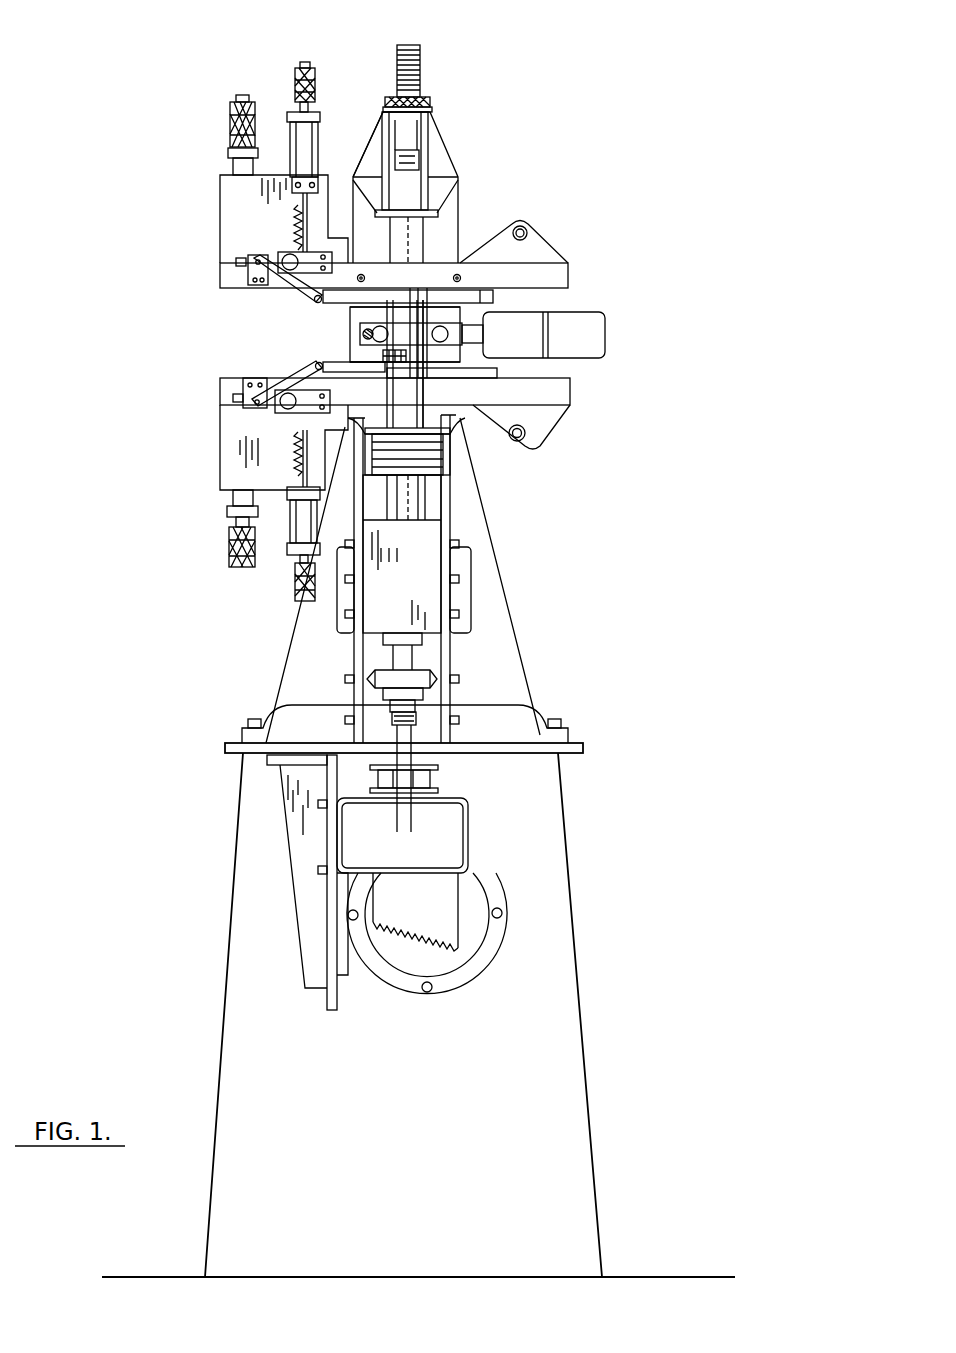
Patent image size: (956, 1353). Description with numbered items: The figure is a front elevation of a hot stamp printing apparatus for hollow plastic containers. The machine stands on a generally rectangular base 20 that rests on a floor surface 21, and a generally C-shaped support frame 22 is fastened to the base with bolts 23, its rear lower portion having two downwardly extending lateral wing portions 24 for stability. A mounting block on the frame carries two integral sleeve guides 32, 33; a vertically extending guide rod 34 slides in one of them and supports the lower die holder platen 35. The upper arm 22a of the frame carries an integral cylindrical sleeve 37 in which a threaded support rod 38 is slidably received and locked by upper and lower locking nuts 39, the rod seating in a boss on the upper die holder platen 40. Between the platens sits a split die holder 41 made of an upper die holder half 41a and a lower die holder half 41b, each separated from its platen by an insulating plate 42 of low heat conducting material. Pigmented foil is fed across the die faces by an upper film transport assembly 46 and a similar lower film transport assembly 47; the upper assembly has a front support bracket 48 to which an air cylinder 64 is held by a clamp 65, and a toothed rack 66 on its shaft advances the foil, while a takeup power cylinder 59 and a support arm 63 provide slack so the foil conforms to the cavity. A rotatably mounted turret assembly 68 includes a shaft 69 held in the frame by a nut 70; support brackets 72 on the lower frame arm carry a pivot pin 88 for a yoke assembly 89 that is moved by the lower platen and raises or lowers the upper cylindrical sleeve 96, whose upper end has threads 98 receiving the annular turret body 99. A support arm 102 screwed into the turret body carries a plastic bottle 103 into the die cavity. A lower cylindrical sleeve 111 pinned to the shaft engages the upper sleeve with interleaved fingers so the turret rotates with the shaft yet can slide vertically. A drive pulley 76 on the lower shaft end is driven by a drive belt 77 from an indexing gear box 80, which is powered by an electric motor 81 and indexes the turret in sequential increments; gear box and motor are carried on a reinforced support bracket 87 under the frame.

The base 20 is at (569, 1046).
The floor surface 21 is at (655, 1277).
The support frame 22 is at (478, 178).
The upper arm of the support frame 22a is at (374, 152).
The bolts 23 is at (250, 720).
The lateral wing portions 24 is at (290, 667).
The sleeve guide 32 is at (348, 605).
The sleeve guide 33 is at (463, 563).
The guide rod 34 is at (348, 503).
The lower die holder platen 35 is at (480, 369).
The cylindrical sleeve 37 is at (420, 140).
The threaded support rod 38 is at (397, 60).
The locking nuts 39 is at (432, 104).
The upper die holder platen 40 is at (483, 302).
The split die holder 41 is at (330, 332).
The upper die holder half 41a is at (356, 315).
The lower die holder half 41b is at (356, 350).
The insulating plate 42 is at (487, 277).
The upper film transport assembly 46 is at (200, 228).
The lower film transport assembly 47 is at (197, 420).
The front support bracket 48 is at (228, 253).
The takeup power cylinder 59 is at (226, 158).
The support arm 63 is at (295, 296).
The air cylinder 64 is at (298, 130).
The clamp 65 is at (292, 193).
The toothed rack 66 is at (300, 235).
The turret assembly 68 is at (432, 499).
The shaft 69 is at (412, 238).
The nut 70 is at (417, 168).
The support brackets 72 is at (365, 658).
The drive pulley 76 is at (436, 762).
The drive belt 77 is at (414, 783).
The indexing gear box 80 is at (450, 832).
The electric motor 81 is at (497, 893).
The reinforced support bracket 87 is at (308, 958).
The pivot pin 88 is at (428, 462).
The yoke assembly 89 is at (452, 430).
The upper cylindrical sleeve 96 is at (394, 394).
The threads 98 is at (446, 280).
The turret body 99 is at (423, 394).
The support arm 102 is at (379, 280).
The plastic bottle 103 is at (592, 334).
The lower cylindrical sleeve 111 is at (412, 527).